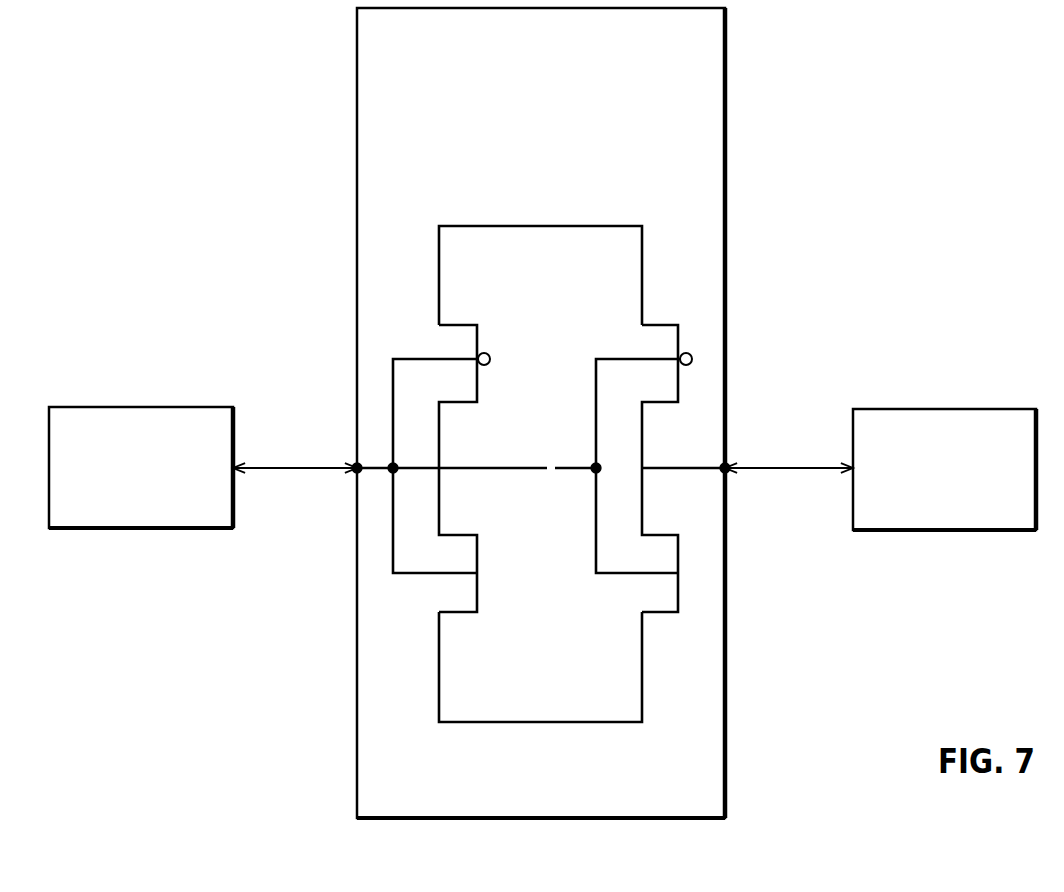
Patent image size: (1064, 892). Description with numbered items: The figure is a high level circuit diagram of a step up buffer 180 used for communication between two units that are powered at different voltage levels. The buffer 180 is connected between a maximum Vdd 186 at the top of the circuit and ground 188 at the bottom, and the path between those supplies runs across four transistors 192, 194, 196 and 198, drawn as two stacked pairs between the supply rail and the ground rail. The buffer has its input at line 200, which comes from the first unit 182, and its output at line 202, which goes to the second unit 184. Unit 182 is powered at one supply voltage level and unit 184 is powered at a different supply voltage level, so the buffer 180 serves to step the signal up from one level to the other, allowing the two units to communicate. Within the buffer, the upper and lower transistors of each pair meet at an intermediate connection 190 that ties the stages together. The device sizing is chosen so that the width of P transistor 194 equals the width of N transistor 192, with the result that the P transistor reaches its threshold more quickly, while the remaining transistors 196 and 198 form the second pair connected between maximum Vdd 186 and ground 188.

The step-up logic buffer / combinational block 180 is at (703, 768).
The unit 182 is at (62, 518).
The unit 184 is at (915, 523).
The maximum Vdd 186 is at (512, 227).
The ground 188 is at (459, 720).
The output node 190 is at (485, 470).
The N transistor 192 is at (492, 337).
The P transistor 194 is at (435, 592).
The transistor 196 is at (673, 302).
The transistor 198 is at (672, 635).
The line 200 is at (267, 467).
The line 202 is at (817, 472).